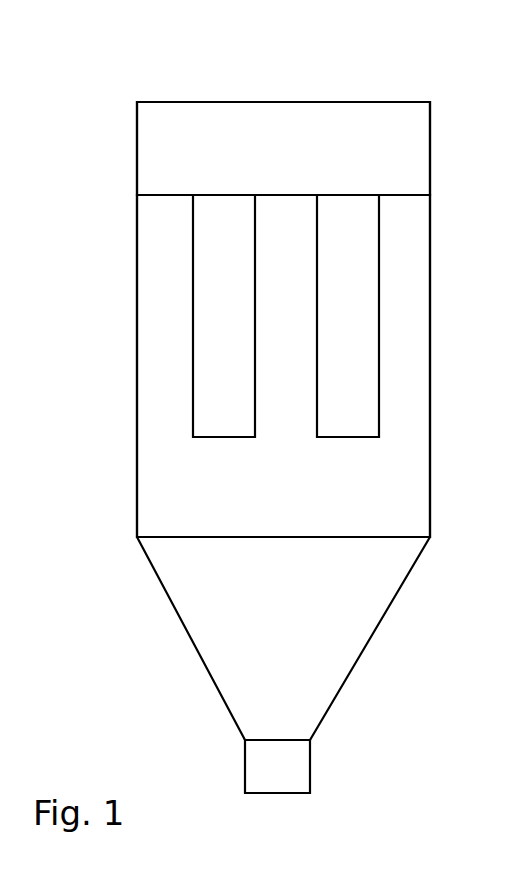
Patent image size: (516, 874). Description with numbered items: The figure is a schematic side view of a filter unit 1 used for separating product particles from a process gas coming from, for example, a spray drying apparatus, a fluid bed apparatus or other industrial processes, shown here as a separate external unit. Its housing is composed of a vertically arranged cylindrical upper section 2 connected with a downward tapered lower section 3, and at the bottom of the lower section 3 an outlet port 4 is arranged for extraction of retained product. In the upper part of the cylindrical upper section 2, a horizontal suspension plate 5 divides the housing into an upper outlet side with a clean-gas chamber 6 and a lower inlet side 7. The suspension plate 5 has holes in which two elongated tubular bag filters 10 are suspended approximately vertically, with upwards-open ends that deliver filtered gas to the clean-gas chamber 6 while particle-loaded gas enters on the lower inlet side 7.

The filter unit 1 is at (196, 85).
The cylindrical upper section 2 is at (137, 397).
The lower section 3 is at (172, 612).
The outlet port 4 is at (310, 757).
The suspension plate 5 is at (415, 197).
The clean-gas chamber 6 is at (173, 155).
The lower inlet side 7 is at (398, 332).
The bag filters 10 is at (209, 289).